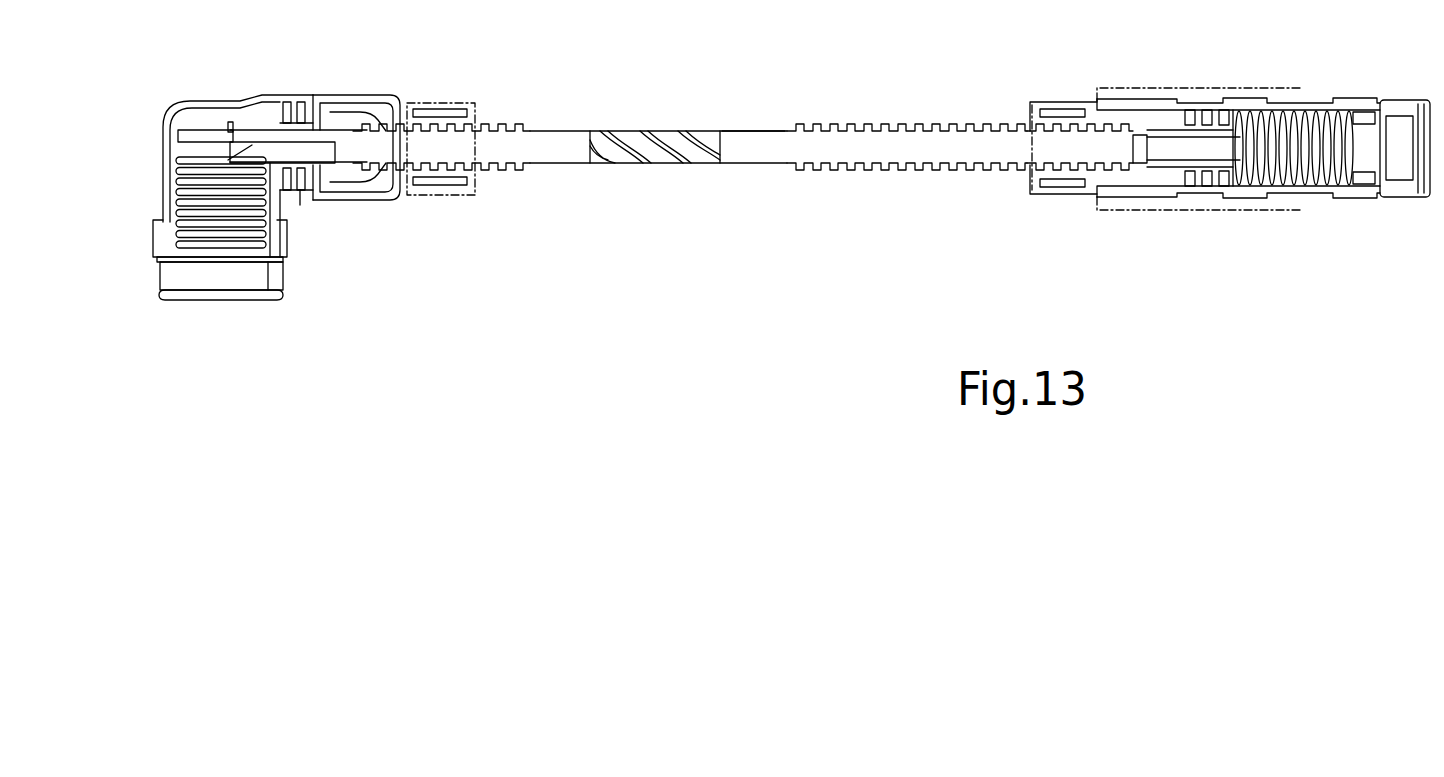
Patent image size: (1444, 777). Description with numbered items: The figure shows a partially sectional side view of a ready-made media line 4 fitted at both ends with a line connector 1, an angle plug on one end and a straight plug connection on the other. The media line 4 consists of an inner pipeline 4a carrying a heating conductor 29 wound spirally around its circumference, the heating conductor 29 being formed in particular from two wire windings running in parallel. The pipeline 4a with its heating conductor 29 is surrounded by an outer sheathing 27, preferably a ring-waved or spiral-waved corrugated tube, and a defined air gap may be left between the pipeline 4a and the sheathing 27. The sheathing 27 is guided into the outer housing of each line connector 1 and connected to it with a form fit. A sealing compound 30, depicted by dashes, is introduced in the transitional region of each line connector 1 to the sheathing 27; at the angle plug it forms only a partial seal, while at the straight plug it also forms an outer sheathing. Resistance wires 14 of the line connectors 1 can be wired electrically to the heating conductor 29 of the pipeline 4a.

The line connector 1 is at (401, 80).
The media line 4 is at (536, 112).
The inner pipeline 4a is at (745, 147).
The resistance wires 14 is at (305, 207).
The outer sheathing 27 is at (838, 138).
The heating conductor 29 is at (693, 165).
The sealing compound 30 is at (478, 196).